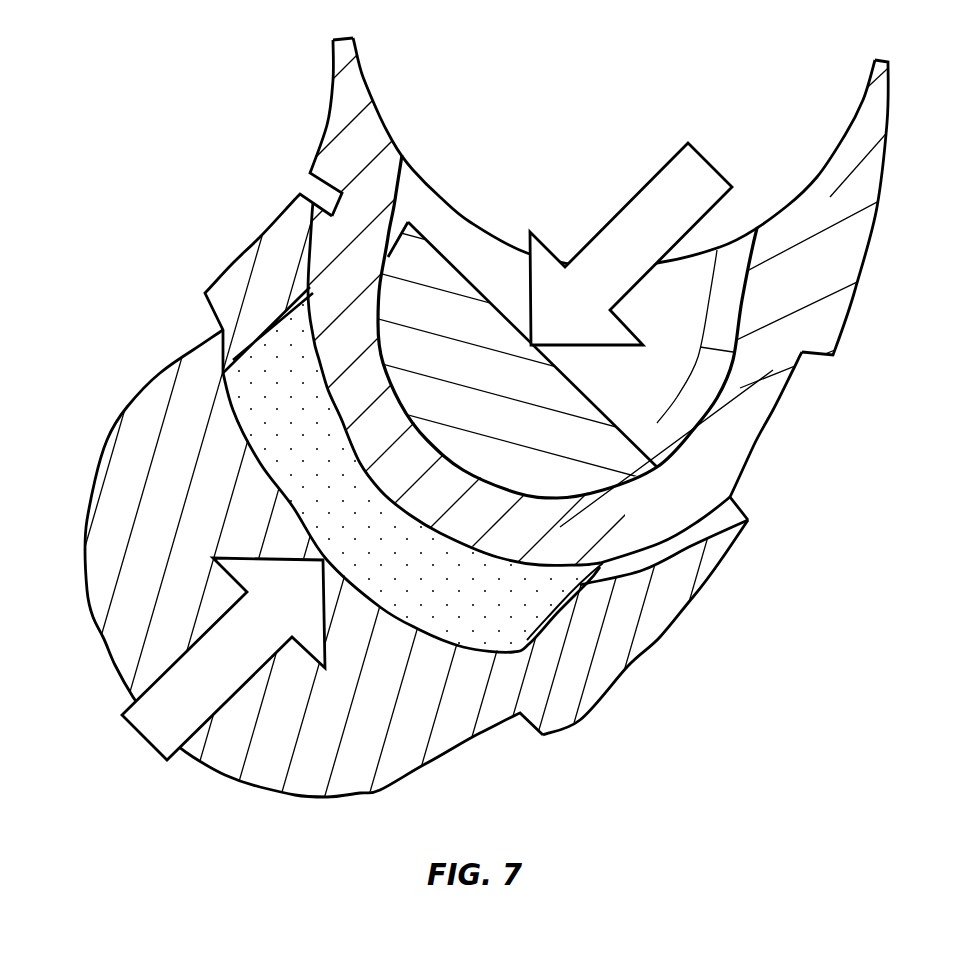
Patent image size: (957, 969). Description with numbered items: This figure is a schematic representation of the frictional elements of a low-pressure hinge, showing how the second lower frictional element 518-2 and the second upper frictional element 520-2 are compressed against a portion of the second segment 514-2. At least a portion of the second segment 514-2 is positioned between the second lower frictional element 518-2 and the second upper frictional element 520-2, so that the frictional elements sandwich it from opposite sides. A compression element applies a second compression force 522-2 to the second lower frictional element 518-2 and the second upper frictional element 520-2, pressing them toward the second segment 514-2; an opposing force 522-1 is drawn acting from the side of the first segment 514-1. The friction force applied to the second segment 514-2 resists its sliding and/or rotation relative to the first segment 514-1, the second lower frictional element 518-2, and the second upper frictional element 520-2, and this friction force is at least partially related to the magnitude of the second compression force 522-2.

The first segment 514-1 is at (454, 752).
The second segment 514-2 is at (786, 396).
The second lower frictional element 518-2 is at (223, 368).
The second upper frictional element 520-2 is at (620, 442).
The force arrow on first component 522-1 is at (140, 734).
The second compression force 522-2 is at (655, 176).